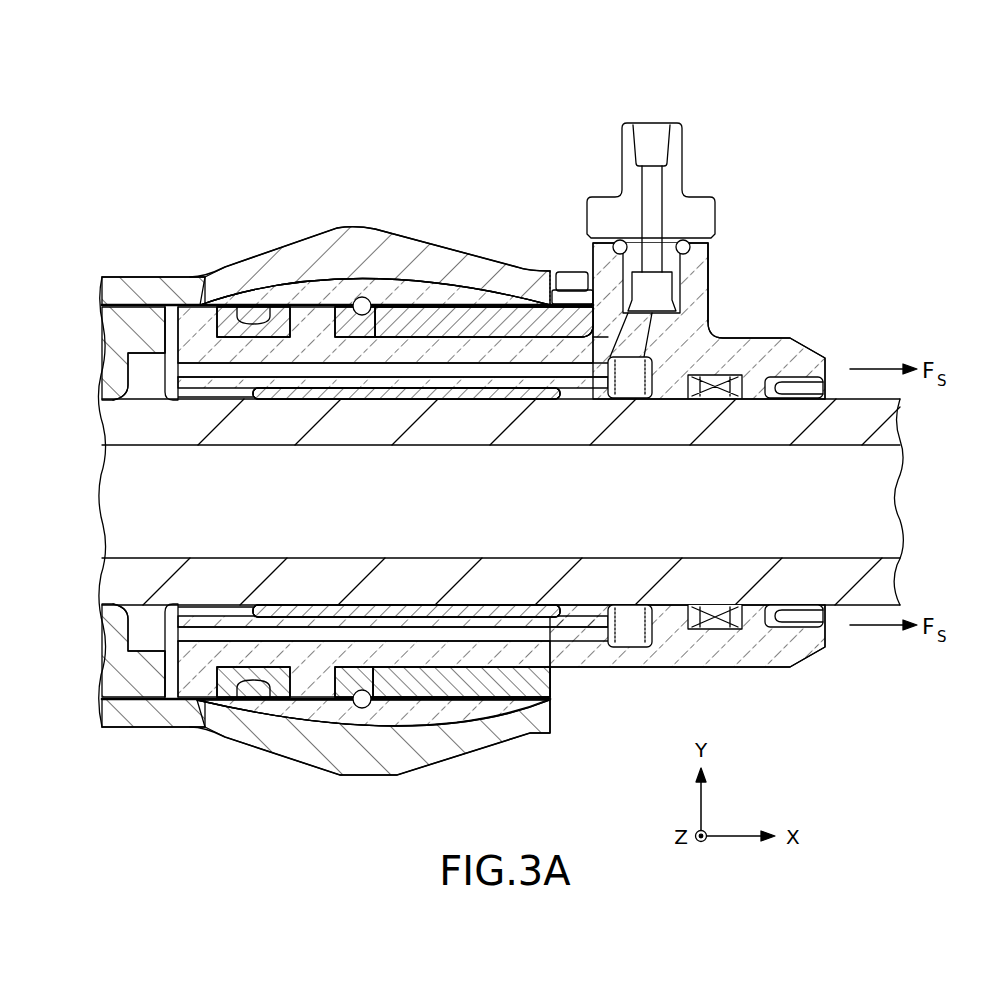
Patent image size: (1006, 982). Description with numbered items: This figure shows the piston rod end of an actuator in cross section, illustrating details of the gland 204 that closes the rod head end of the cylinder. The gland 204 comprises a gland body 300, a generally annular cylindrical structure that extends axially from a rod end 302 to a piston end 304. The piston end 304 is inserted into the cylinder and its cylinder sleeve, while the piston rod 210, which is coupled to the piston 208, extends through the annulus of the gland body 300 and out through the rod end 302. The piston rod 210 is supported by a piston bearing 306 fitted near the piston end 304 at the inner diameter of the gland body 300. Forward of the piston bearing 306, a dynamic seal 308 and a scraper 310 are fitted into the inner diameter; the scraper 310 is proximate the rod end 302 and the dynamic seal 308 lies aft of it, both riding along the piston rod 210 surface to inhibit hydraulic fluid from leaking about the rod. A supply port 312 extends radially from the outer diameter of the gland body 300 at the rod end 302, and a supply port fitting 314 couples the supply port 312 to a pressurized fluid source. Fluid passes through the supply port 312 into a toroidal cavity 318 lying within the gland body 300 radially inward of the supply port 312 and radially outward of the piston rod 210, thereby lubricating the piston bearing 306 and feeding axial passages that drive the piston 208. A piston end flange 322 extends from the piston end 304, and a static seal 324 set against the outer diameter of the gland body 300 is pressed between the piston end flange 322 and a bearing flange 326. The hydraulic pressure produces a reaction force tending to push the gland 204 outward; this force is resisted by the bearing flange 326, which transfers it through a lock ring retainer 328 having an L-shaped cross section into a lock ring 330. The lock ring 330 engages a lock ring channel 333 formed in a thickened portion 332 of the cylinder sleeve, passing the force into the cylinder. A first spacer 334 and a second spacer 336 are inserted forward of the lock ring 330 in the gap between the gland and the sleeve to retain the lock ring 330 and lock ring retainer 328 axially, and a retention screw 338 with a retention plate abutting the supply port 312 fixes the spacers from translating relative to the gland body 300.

The gland 204 is at (920, 76).
The piston 208 is at (113, 324).
The piston rod 210 is at (904, 429).
The gland body 300 is at (726, 338).
The rod end 302 is at (880, 260).
The piston end 304 is at (212, 225).
The piston bearing 306 is at (385, 611).
The dynamic seal 308 is at (713, 610).
The scraper 310 is at (792, 610).
The supply port 312 is at (705, 273).
The supply port fitting 314 is at (697, 202).
The toroidal cavity 318 is at (630, 394).
The piston end flange 322 is at (200, 679).
The static seal 324 is at (257, 674).
The bearing flange 326 is at (326, 685).
The lock ring retainer 328 is at (338, 318).
The lock ring 330 is at (357, 306).
The thickened portion 332 is at (423, 297).
The lock ring channel 333 is at (364, 702).
The first spacer 334 is at (485, 317).
The second spacer 336 is at (480, 681).
The retention screw 338 is at (571, 272).